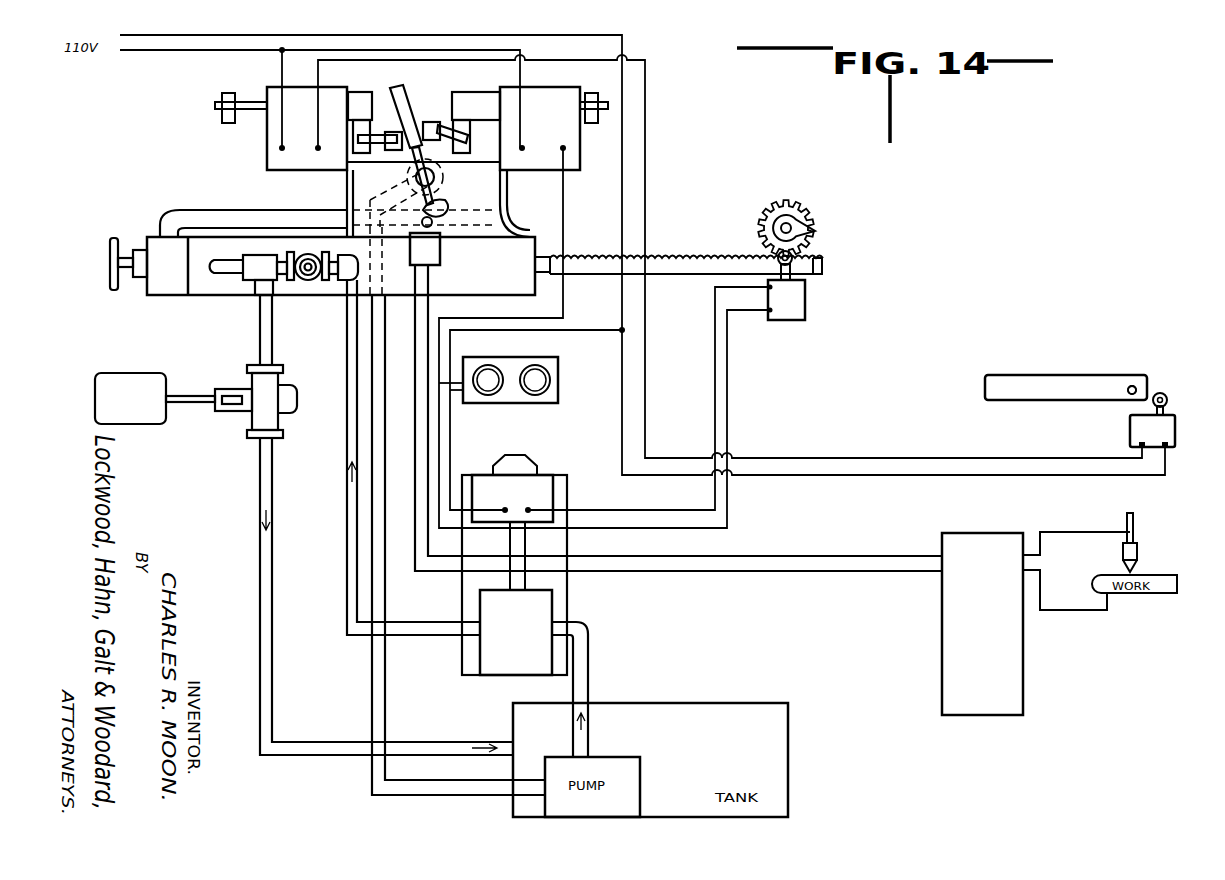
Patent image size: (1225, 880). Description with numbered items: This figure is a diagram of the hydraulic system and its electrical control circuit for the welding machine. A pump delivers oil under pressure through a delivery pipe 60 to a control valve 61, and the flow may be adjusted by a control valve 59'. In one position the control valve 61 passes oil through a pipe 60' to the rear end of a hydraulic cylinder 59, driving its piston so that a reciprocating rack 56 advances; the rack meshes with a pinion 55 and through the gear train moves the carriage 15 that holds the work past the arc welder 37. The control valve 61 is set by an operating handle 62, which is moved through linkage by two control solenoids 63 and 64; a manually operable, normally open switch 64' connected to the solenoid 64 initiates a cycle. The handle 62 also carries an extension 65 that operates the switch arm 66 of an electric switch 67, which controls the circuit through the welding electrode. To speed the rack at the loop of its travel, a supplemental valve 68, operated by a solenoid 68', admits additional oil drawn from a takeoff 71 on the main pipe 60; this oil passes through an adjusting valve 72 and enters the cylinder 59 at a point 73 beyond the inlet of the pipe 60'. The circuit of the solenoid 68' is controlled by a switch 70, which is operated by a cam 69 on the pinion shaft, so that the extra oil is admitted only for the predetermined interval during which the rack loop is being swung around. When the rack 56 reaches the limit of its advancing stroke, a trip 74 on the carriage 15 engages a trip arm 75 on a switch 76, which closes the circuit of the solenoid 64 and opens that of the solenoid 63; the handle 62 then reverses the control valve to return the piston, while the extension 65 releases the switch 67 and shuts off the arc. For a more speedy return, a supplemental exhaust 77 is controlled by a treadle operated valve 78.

The carriage 15 is at (1107, 375).
The arc welder 37 is at (1137, 552).
The pinion 55 is at (787, 200).
The reciprocating rack 56 is at (687, 250).
The hydraulic cylinder 59 is at (341, 285).
The control valve 59' is at (127, 286).
The delivery pipe 60 is at (458, 545).
The pipe 60' is at (253, 205).
The control valve 61 is at (485, 195).
The operating handle 62 is at (405, 103).
The control solenoid 63 is at (554, 128).
The control solenoid 64 is at (281, 128).
The manually operable normally open switch 64' is at (510, 399).
The extension 65 is at (443, 207).
The switch arm 66 is at (423, 215).
The electric switch 67 is at (440, 255).
The supplemental valve 68 is at (516, 632).
The solenoid 68' is at (514, 565).
The cam 69 is at (805, 232).
The switch 70 is at (800, 296).
The takeoff 71 is at (582, 670).
The adjusting valve 72 is at (312, 287).
The point 73 is at (213, 258).
The trip 74 is at (1138, 390).
The trip arm 75 is at (1168, 400).
The switch 76 is at (1167, 432).
The supplemental exhaust 77 is at (260, 343).
The treadle operated valve 78 is at (259, 413).